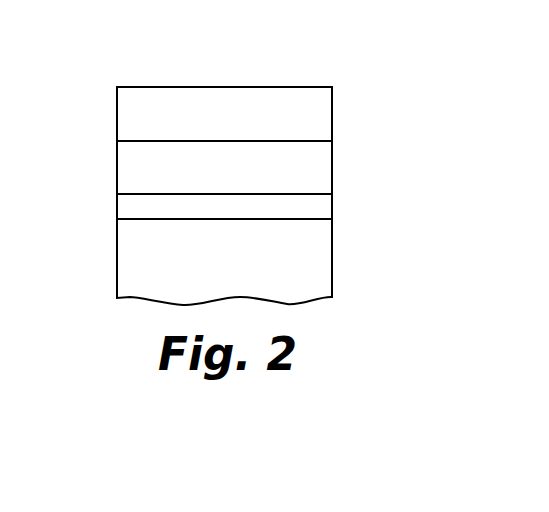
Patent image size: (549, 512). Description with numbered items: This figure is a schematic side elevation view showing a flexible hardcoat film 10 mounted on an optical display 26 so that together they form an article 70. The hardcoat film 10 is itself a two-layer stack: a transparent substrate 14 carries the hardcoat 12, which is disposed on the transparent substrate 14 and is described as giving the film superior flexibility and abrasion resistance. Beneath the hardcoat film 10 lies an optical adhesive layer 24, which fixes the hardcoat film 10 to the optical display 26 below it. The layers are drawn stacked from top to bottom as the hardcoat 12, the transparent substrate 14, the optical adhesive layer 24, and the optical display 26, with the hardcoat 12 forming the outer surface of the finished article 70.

The article 70 is at (305, 62).
The hardcoat film 10 is at (105, 88).
The hardcoat 12 is at (200, 130).
The transparent substrate 14 is at (200, 181).
The optical adhesive layer 24 is at (323, 207).
The optical display 26 is at (323, 262).